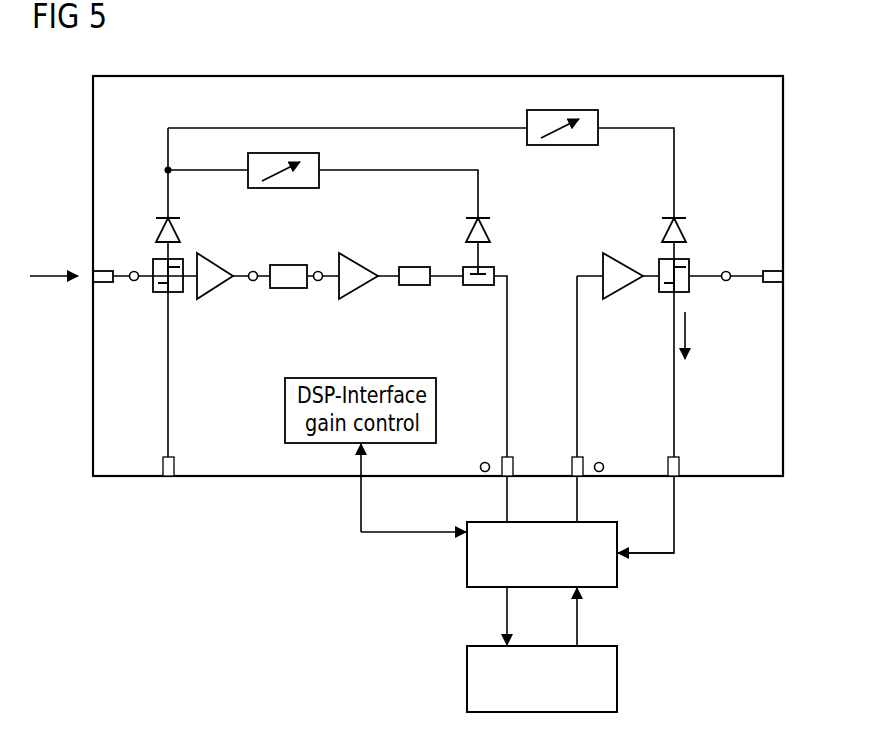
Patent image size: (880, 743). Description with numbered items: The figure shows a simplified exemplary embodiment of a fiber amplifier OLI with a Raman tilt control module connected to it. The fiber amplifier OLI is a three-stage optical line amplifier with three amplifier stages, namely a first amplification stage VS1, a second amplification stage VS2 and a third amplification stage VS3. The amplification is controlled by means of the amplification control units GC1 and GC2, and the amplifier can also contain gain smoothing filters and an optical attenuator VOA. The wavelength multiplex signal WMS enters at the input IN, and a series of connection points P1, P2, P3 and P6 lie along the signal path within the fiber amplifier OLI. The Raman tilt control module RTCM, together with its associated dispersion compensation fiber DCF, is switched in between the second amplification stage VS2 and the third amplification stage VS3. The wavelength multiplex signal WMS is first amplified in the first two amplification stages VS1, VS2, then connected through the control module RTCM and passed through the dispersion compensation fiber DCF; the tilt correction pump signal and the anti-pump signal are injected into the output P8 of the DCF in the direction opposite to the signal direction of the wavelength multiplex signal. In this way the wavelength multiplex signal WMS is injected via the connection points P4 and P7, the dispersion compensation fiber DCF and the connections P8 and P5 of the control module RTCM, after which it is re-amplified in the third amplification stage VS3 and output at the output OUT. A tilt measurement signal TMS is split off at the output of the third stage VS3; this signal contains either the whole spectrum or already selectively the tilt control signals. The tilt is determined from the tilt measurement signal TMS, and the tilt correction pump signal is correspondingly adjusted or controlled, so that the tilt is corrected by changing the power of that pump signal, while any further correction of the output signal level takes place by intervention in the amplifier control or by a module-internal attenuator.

The fiber amplifier OLI is at (438, 276).
The input IN is at (106, 293).
The output OUT is at (803, 279).
The wavelength multiplex signal WMS is at (54, 259).
The tilt measurement signal TMS is at (709, 333).
The amplification control unit GC1 is at (319, 182).
The amplification control unit GC2 is at (571, 147).
The first amplification stage VS1 is at (216, 291).
The second amplification stage VS2 is at (356, 291).
The third amplification stage VS3 is at (618, 292).
The optical attenuator VOA is at (290, 288).
The connection point P1 is at (134, 271).
The connection point P2 is at (253, 271).
The connection point P3 is at (318, 271).
The connection point P4 is at (485, 462).
The connection point P5 is at (599, 462).
The connection point P6 is at (726, 271).
The connection point P7 is at (491, 616).
The output of the DCF P8 is at (594, 617).
The Raman tilt control module RTCM is at (542, 554).
The dispersion compensation fiber DCF is at (542, 679).